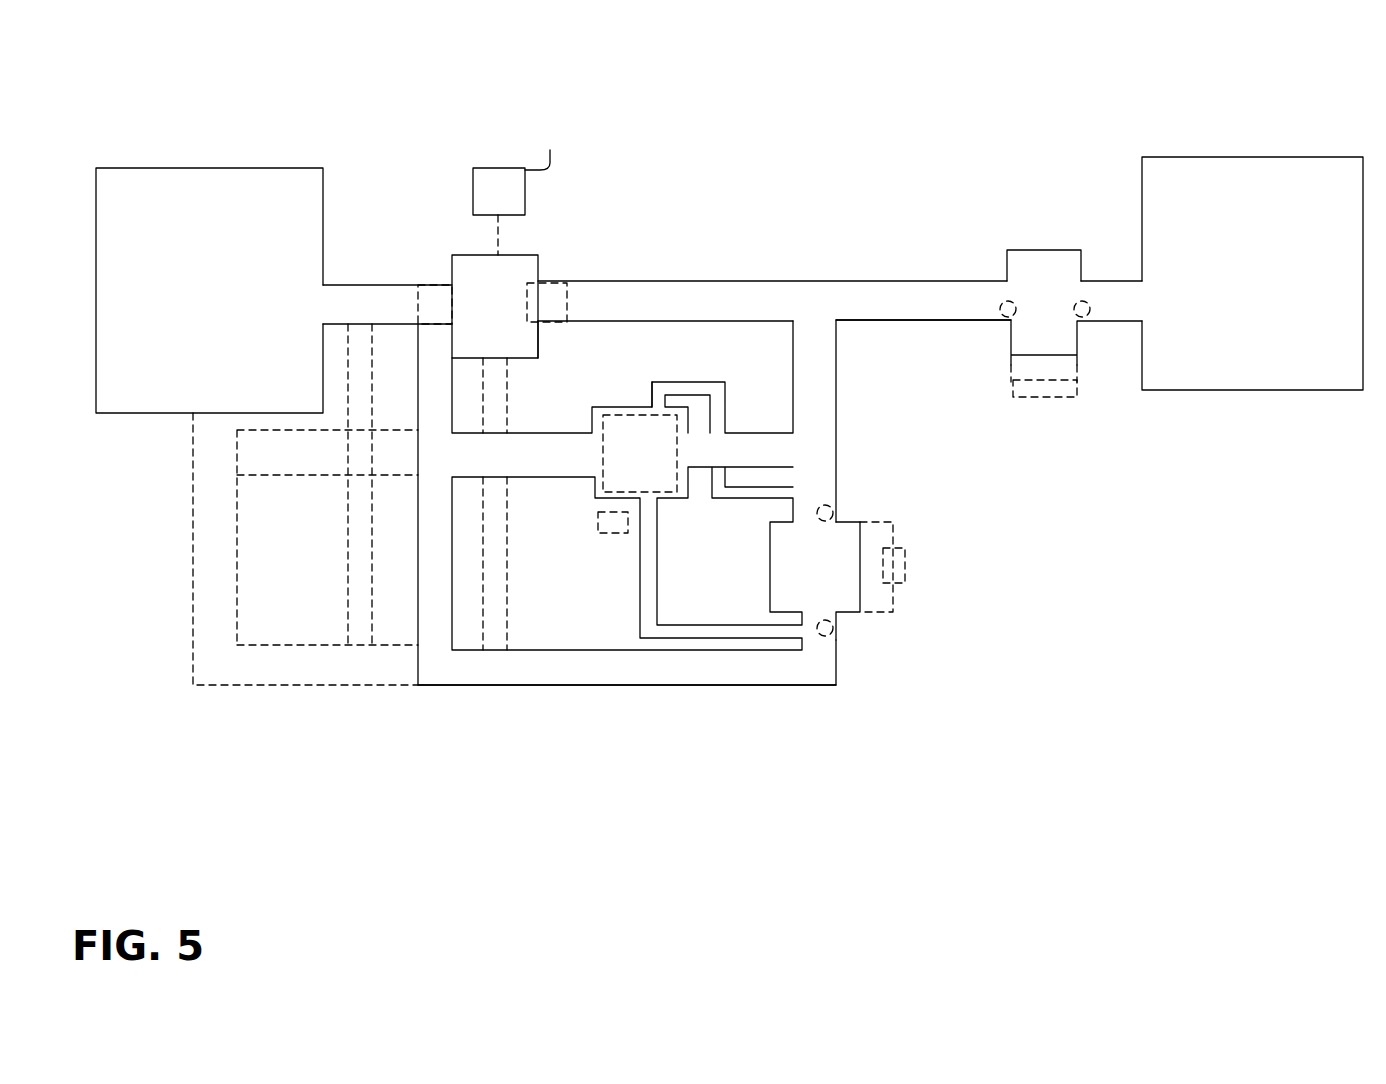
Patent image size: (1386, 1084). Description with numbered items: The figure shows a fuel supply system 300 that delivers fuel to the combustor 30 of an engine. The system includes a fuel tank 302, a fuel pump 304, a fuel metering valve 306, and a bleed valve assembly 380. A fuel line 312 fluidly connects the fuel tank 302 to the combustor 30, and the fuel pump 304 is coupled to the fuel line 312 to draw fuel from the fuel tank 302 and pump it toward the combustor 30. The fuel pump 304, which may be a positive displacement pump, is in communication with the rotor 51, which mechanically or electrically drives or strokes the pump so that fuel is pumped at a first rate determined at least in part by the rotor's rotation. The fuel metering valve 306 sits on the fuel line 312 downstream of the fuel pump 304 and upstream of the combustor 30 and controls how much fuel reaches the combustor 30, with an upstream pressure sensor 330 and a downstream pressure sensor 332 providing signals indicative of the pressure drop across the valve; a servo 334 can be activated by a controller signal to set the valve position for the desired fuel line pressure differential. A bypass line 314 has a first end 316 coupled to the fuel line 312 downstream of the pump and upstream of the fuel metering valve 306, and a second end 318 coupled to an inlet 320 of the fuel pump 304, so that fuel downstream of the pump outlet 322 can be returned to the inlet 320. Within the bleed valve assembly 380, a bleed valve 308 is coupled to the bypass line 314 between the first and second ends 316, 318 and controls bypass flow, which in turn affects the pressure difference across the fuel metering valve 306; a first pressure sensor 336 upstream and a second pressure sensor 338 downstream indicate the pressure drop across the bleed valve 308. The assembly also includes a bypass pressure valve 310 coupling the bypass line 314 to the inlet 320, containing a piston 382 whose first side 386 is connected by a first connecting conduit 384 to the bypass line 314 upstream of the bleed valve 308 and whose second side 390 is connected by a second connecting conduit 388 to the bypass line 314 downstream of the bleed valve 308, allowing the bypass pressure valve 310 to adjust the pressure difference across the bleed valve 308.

The fuel supply system 300 is at (466, 110).
The fuel tank 302 is at (181, 277).
The fuel pump 304 is at (540, 252).
The rotor 51 is at (490, 202).
The fuel metering valve 306 is at (1004, 249).
The bleed valve 308 is at (860, 520).
The bypass pressure valve 310 is at (592, 418).
The fuel line 312 is at (739, 277).
The bypass line 314 is at (842, 414).
The first end 316 is at (838, 323).
The second end 318 is at (418, 328).
The inlet 320 is at (418, 308).
The outlet 322 is at (565, 305).
The upstream pressure sensor 330 is at (1000, 305).
The downstream pressure sensor 332 is at (1090, 302).
The servo 334 is at (608, 535).
The first pressure sensor 336 is at (833, 510).
The second pressure sensor 338 is at (833, 632).
The bleed valve assembly 380 is at (650, 703).
The piston 382 is at (617, 402).
The first connecting conduit 384 is at (690, 382).
The first side 386 is at (641, 405).
The second connecting conduit 388 is at (690, 625).
The second side 390 is at (665, 500).
The combustor 30 is at (1243, 272).